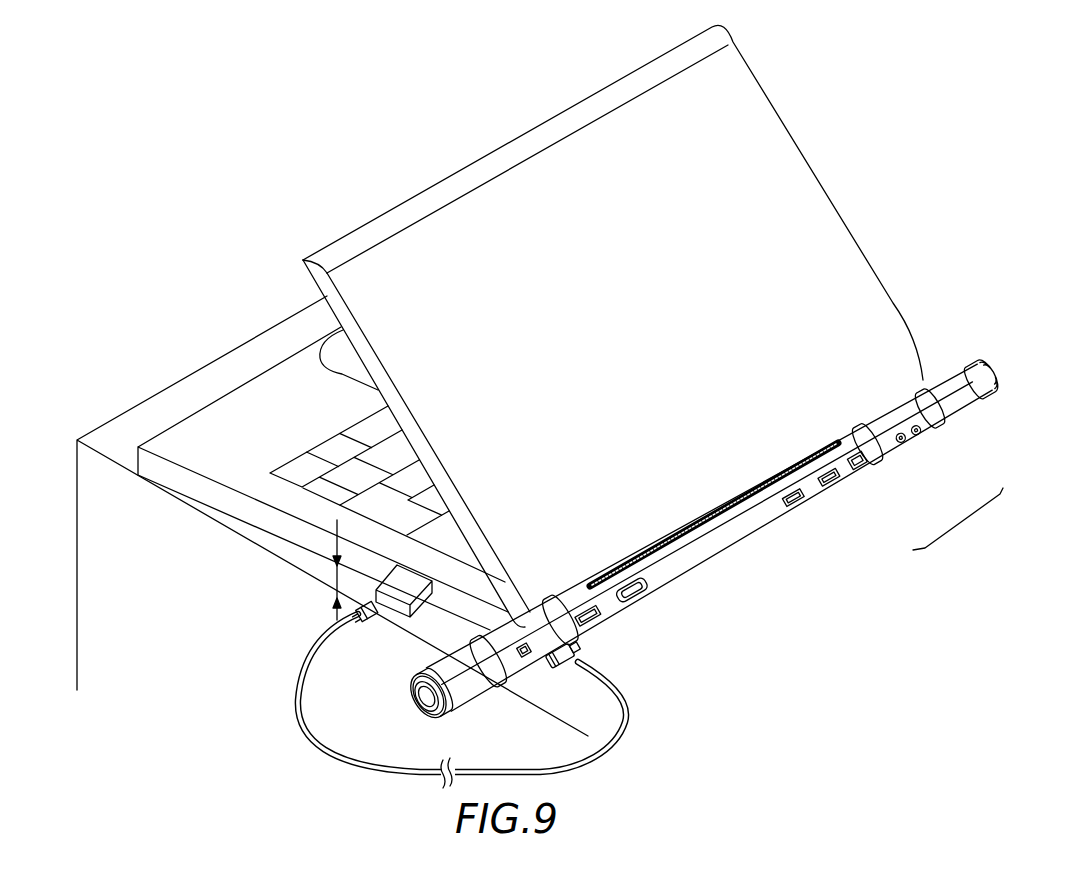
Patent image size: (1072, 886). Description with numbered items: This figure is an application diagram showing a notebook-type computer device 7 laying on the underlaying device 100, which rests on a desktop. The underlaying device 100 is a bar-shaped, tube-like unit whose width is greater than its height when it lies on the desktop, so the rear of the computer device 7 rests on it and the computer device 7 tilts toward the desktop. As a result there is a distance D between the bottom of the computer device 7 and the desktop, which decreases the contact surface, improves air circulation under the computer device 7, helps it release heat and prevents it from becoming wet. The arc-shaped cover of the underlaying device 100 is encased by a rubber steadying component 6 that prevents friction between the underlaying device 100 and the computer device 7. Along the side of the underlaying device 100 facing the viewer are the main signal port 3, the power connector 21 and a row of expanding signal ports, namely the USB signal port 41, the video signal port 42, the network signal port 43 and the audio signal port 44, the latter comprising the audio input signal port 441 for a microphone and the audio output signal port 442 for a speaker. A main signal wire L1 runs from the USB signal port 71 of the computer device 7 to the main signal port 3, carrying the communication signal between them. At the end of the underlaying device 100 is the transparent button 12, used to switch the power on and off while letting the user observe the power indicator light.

The computer device 7 is at (822, 218).
The underlaying device 100 is at (960, 403).
The button 12 is at (430, 696).
The power connector 21 is at (522, 672).
The main signal port 3 is at (548, 666).
The USB signal port 41 is at (592, 636).
The video signal port 42 is at (648, 598).
The network signal port 43 is at (858, 480).
The audio signal port 44 is at (958, 525).
The audio input signal port 441 is at (915, 441).
The audio output signal port 442 is at (898, 448).
The steadying component 6 is at (428, 620).
The USB signal port of the computer device 71 is at (364, 620).
The main signal wire L1 is at (297, 690).
The distance D is at (333, 580).